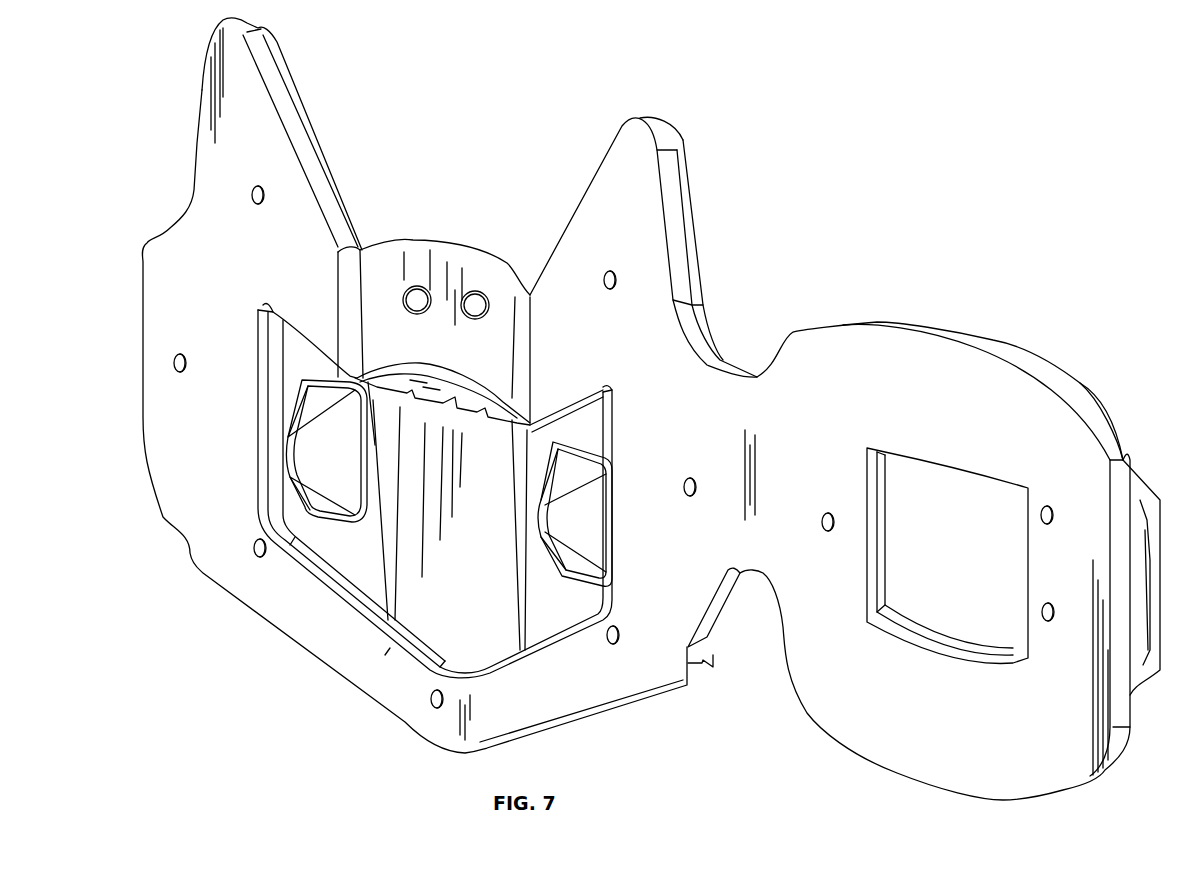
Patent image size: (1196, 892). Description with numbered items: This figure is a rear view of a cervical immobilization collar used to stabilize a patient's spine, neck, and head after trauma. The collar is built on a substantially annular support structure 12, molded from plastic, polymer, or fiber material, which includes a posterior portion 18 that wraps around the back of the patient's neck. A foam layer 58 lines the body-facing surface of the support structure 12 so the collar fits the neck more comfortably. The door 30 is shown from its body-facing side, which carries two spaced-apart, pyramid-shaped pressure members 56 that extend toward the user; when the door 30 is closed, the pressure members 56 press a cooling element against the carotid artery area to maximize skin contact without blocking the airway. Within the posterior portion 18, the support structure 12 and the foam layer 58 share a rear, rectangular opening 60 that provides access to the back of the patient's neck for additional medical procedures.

The substantially annular support structure 12 is at (280, 57).
The foam layer 58 is at (251, 129).
The door 30 is at (477, 650).
The pressure members 56 is at (313, 455).
The rear rectangular opening 60 is at (931, 487).
The posterior portion 18 is at (1100, 403).